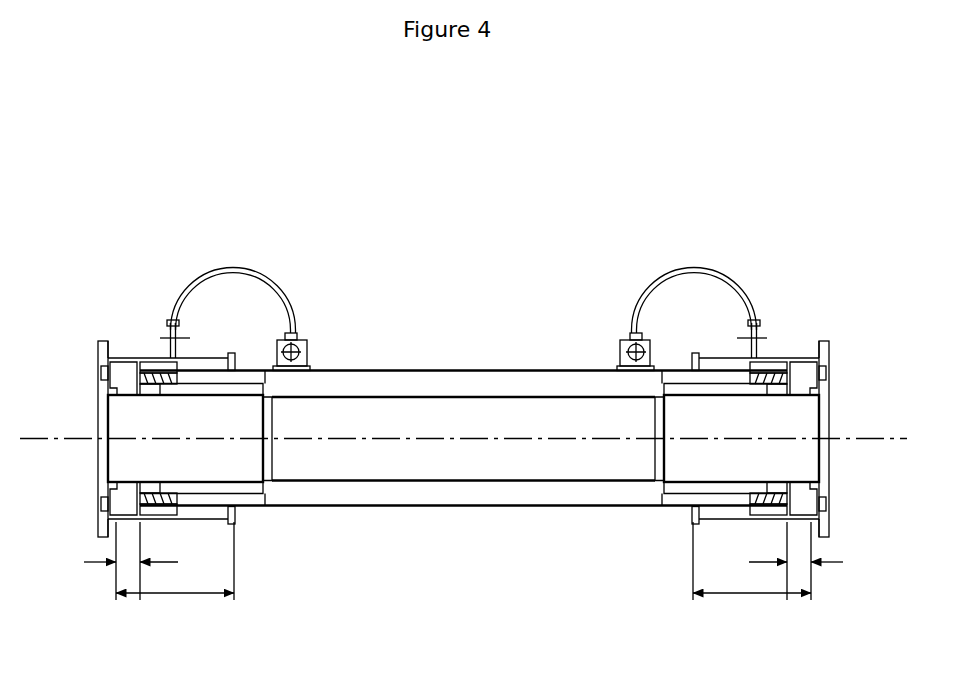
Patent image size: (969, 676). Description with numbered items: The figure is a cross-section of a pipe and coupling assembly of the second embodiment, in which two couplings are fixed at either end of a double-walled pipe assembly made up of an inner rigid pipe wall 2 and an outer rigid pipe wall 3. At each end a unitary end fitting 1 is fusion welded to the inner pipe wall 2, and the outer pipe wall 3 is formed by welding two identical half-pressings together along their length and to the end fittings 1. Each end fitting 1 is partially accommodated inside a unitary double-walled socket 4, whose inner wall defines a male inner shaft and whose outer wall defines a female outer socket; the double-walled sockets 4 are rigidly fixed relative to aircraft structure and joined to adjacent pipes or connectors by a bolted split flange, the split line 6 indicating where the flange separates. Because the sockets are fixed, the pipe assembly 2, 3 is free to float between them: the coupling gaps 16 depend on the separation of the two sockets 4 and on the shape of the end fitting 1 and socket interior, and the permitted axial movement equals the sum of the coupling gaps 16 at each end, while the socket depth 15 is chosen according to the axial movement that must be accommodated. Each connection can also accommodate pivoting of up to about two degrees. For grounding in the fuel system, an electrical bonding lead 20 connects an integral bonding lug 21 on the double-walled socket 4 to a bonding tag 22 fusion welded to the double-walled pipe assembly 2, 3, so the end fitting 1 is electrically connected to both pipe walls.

The end fitting 1 is at (148, 397).
The inner rigid pipe wall 2 is at (508, 397).
The outer rigid pipe wall 3 is at (468, 370).
The double-walled socket 4 is at (127, 357).
The split line 6 is at (97, 341).
The socket depth 15 is at (178, 593).
The coupling gap 16 is at (127, 562).
The electrical bonding lead 20 is at (258, 268).
The integral bonding lug 21 is at (168, 328).
The bonding tag 22 is at (300, 343).